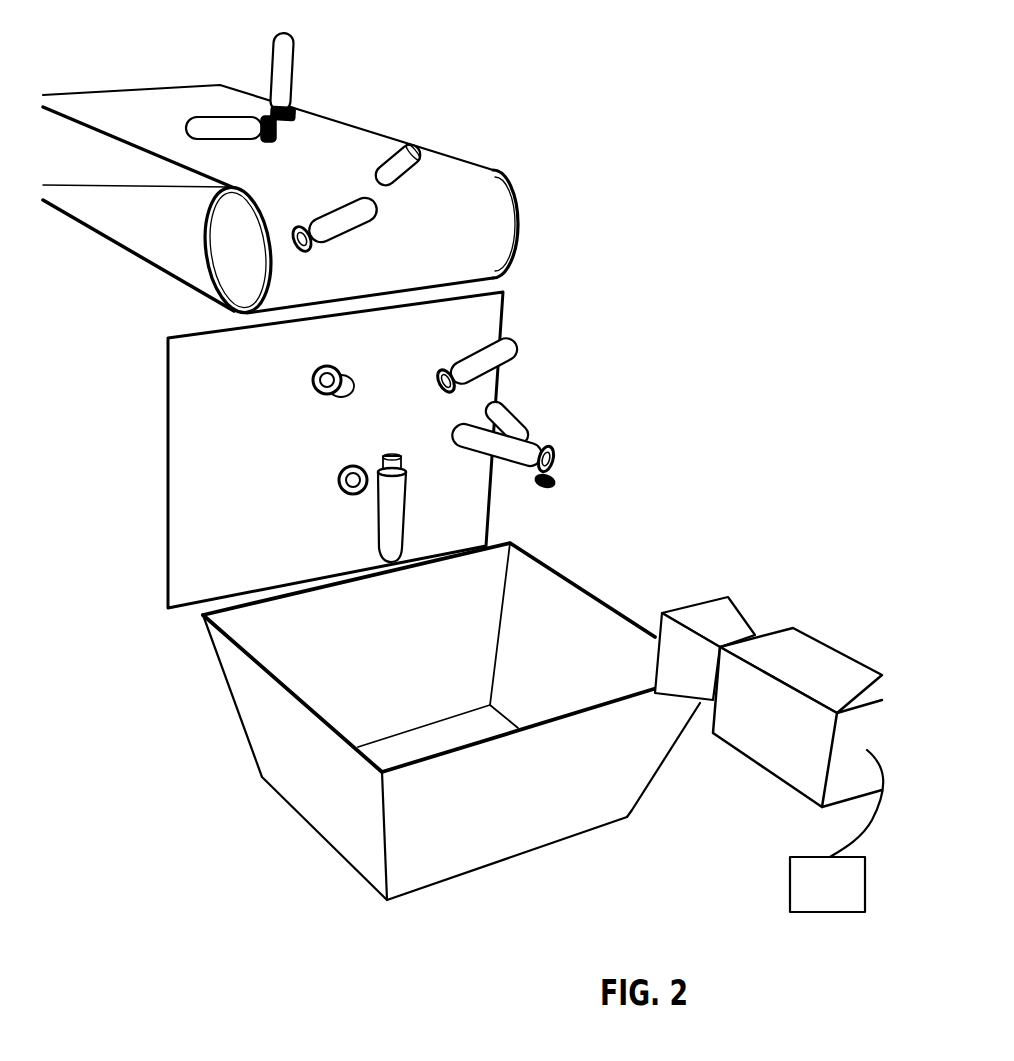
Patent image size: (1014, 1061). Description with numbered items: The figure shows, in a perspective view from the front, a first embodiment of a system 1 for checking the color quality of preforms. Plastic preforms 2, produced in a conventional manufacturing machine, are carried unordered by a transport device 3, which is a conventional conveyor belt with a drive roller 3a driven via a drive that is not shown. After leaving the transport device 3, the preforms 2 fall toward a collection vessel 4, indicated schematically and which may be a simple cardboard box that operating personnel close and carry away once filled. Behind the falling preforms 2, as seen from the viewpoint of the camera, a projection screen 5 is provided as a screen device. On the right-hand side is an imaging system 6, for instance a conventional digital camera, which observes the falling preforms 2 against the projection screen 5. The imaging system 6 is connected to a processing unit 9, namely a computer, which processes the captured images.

The system 1 is at (642, 120).
The preforms 2 is at (388, 160).
The transport device 3 is at (122, 255).
The drive roller 3a is at (242, 258).
The collection vessel 4 is at (307, 802).
The projection screen 5 is at (192, 473).
The imaging system 6 is at (805, 672).
The processing unit 9 is at (818, 903).